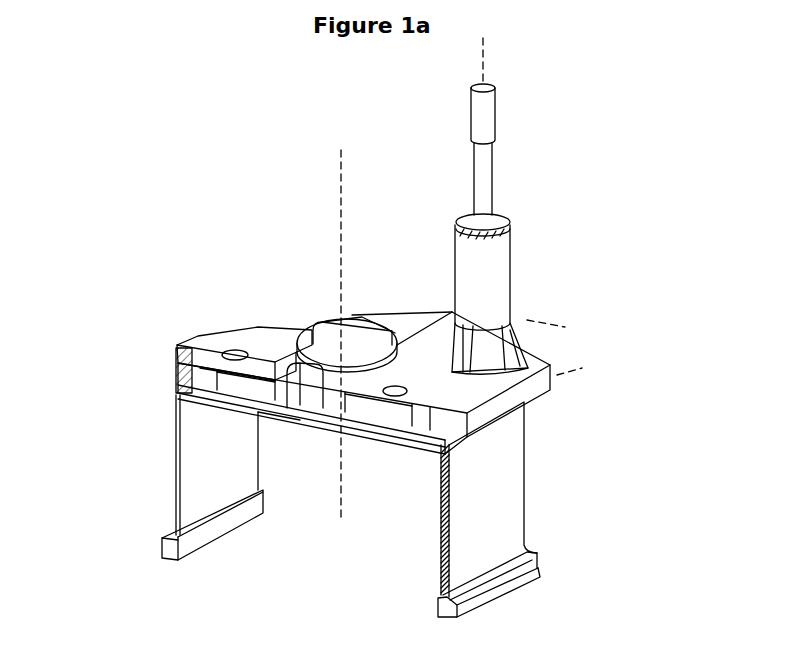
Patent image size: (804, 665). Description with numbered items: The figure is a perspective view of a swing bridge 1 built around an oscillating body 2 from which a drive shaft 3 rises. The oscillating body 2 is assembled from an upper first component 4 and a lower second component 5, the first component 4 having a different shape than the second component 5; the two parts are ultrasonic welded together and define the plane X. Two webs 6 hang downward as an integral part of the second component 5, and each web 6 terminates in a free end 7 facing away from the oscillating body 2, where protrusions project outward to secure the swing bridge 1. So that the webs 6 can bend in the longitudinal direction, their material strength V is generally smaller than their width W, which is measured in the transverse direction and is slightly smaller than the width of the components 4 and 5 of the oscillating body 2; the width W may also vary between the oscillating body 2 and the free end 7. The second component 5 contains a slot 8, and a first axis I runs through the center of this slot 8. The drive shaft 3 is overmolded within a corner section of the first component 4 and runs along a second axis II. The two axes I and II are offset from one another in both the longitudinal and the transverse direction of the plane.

The swing bridge 1 is at (203, 200).
The oscillating body 2 is at (200, 348).
The drive shaft 3 is at (483, 168).
The first component 4 is at (215, 370).
The second component 5 is at (220, 397).
The webs 6 is at (500, 490).
The free end 7 is at (528, 567).
The slot 8 is at (323, 442).
The first axis I is at (340, 168).
The second axis II is at (483, 57).
The plane X is at (568, 327).
The material strength V is at (467, 523).
The width W is at (557, 585).